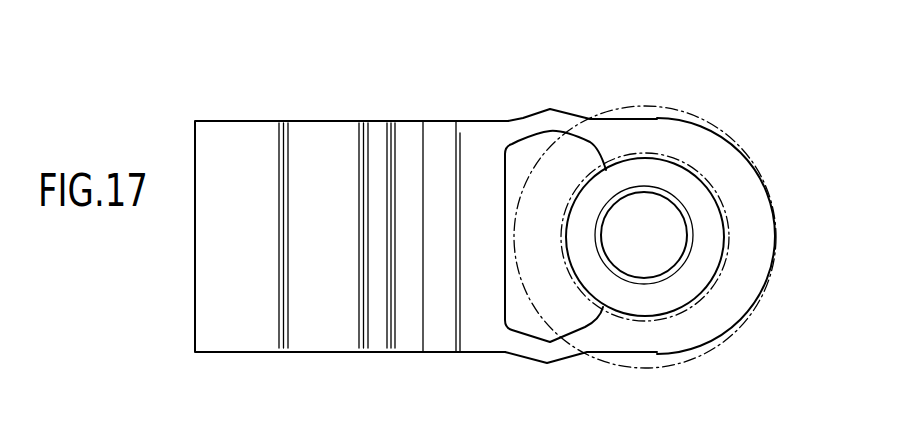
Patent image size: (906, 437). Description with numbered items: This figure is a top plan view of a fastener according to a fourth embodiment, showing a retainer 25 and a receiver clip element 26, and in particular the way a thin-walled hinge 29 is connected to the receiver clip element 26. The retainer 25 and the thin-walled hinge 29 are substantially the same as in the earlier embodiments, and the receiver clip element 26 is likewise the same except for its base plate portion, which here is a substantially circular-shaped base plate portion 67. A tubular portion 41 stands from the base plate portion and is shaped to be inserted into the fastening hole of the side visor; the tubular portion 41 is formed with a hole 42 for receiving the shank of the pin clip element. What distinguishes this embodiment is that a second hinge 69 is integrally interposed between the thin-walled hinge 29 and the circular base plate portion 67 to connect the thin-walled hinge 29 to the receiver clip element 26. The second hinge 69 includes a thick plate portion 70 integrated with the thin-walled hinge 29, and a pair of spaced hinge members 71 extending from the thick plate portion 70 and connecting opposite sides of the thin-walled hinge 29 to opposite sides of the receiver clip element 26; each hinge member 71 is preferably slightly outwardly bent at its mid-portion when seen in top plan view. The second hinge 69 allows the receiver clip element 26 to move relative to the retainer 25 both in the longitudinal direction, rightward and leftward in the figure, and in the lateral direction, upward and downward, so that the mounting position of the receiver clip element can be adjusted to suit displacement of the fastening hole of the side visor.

The retainer 25 is at (228, 113).
The receiver clip element 26 is at (728, 123).
The thin-walled hinge 29 is at (450, 160).
The tubular portion 41 is at (705, 248).
The hole 42 is at (658, 253).
The base plate portion 67 is at (750, 183).
The second hinge 69 is at (430, 55).
The thick plate portion 70 is at (495, 132).
The hinge members 71 is at (525, 123).